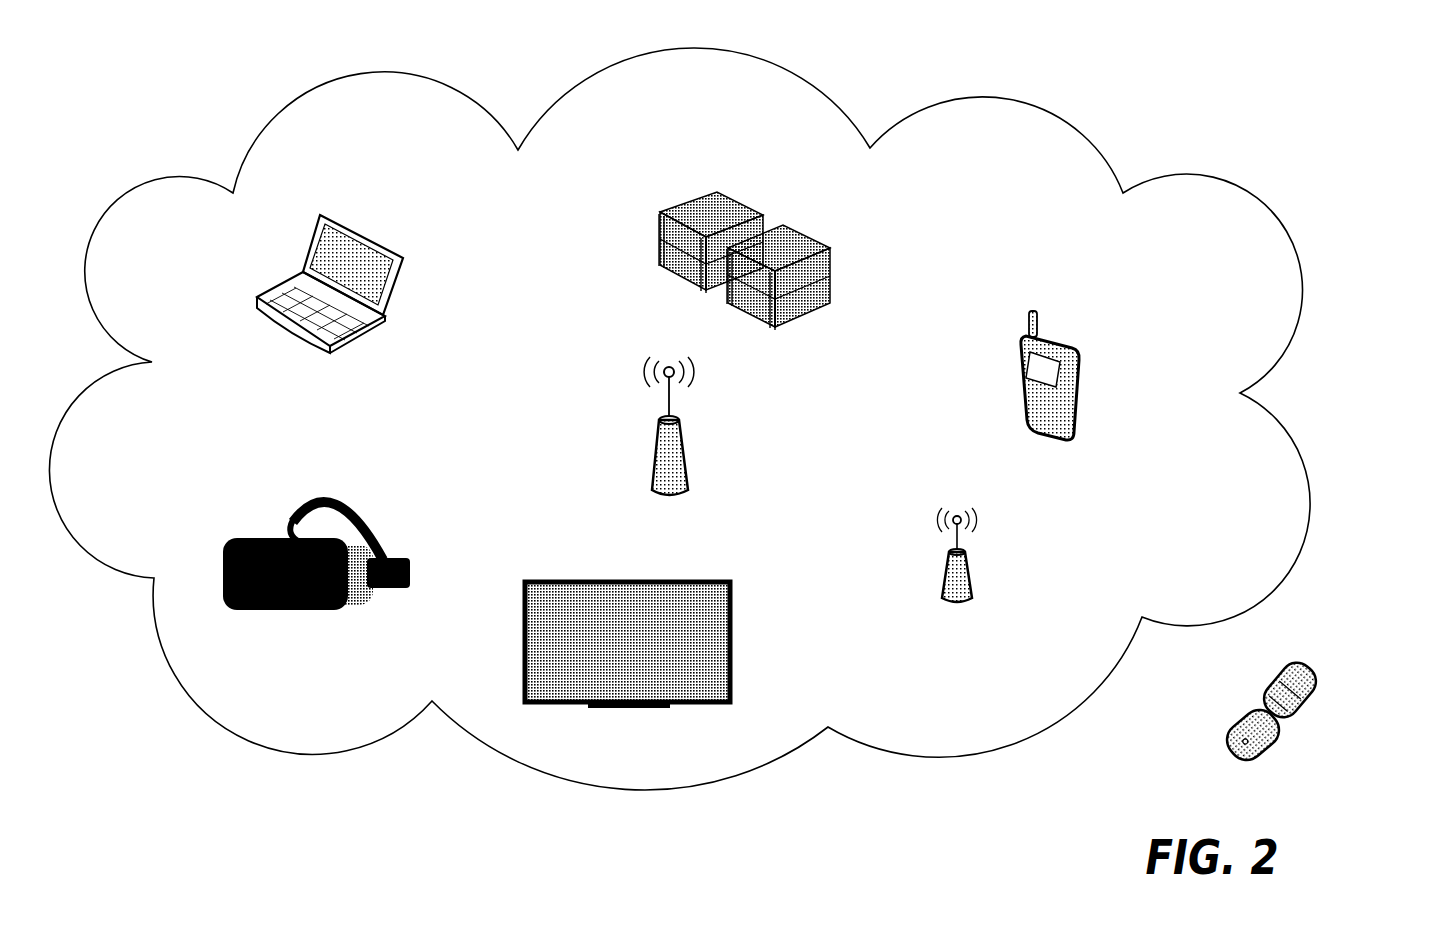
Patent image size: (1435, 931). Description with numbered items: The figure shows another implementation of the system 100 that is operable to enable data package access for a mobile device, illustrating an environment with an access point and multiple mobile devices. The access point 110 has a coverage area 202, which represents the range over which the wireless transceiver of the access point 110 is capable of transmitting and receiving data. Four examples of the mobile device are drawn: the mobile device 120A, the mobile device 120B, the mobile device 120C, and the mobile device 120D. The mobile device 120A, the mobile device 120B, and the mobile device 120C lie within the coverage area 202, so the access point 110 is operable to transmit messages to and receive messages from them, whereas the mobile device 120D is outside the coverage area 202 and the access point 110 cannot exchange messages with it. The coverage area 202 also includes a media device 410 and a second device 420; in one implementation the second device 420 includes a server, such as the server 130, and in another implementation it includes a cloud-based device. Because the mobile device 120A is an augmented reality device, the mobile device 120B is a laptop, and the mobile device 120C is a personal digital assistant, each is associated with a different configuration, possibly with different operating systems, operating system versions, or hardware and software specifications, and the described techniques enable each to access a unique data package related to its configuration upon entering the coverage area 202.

The system 100 is at (172, 102).
The coverage area 202 is at (1260, 390).
The mobile device 120A is at (388, 536).
The mobile device 120B is at (388, 307).
The mobile device 120C is at (1080, 408).
The mobile device 120D is at (1305, 720).
The server 130 is at (831, 264).
The access point 110 is at (688, 458).
The second device 420 is at (972, 573).
The media device 410 is at (730, 662).